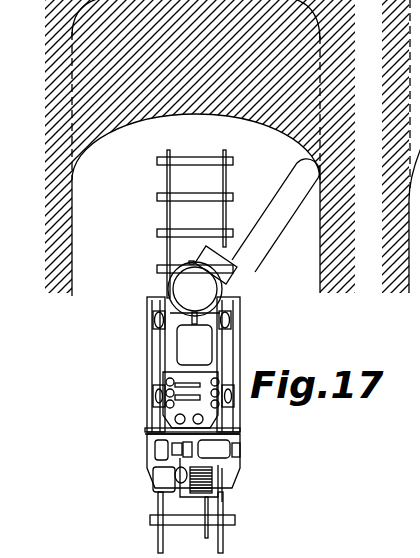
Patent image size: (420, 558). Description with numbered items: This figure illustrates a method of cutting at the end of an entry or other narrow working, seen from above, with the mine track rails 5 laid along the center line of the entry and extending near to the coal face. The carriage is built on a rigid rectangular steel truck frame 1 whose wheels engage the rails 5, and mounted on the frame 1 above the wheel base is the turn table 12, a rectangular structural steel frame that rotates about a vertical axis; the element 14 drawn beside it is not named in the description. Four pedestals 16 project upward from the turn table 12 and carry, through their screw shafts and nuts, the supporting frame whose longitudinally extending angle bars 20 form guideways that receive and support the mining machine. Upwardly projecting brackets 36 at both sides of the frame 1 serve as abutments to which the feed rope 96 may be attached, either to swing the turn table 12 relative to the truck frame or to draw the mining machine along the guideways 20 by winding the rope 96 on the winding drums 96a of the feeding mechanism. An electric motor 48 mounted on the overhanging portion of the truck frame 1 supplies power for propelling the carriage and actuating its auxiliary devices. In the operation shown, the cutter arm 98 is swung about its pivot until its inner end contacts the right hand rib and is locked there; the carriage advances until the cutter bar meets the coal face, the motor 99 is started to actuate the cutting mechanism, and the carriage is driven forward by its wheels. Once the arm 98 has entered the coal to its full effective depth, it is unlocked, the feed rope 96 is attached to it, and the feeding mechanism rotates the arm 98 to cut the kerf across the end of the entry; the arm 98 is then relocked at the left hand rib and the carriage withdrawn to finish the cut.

The truck frame 1 is at (148, 415).
The rails 5 is at (167, 212).
The turn table 12 is at (195, 384).
The upright post 14 is at (241, 350).
The pedestals 16 is at (154, 319).
The angle bars 20 is at (241, 427).
The brackets 36 is at (241, 433).
The electric motor 48 is at (160, 486).
The feed rope 96 is at (165, 341).
The winding drums 96a is at (153, 386).
The cutter arm 98 is at (266, 228).
The motor 99 is at (212, 343).